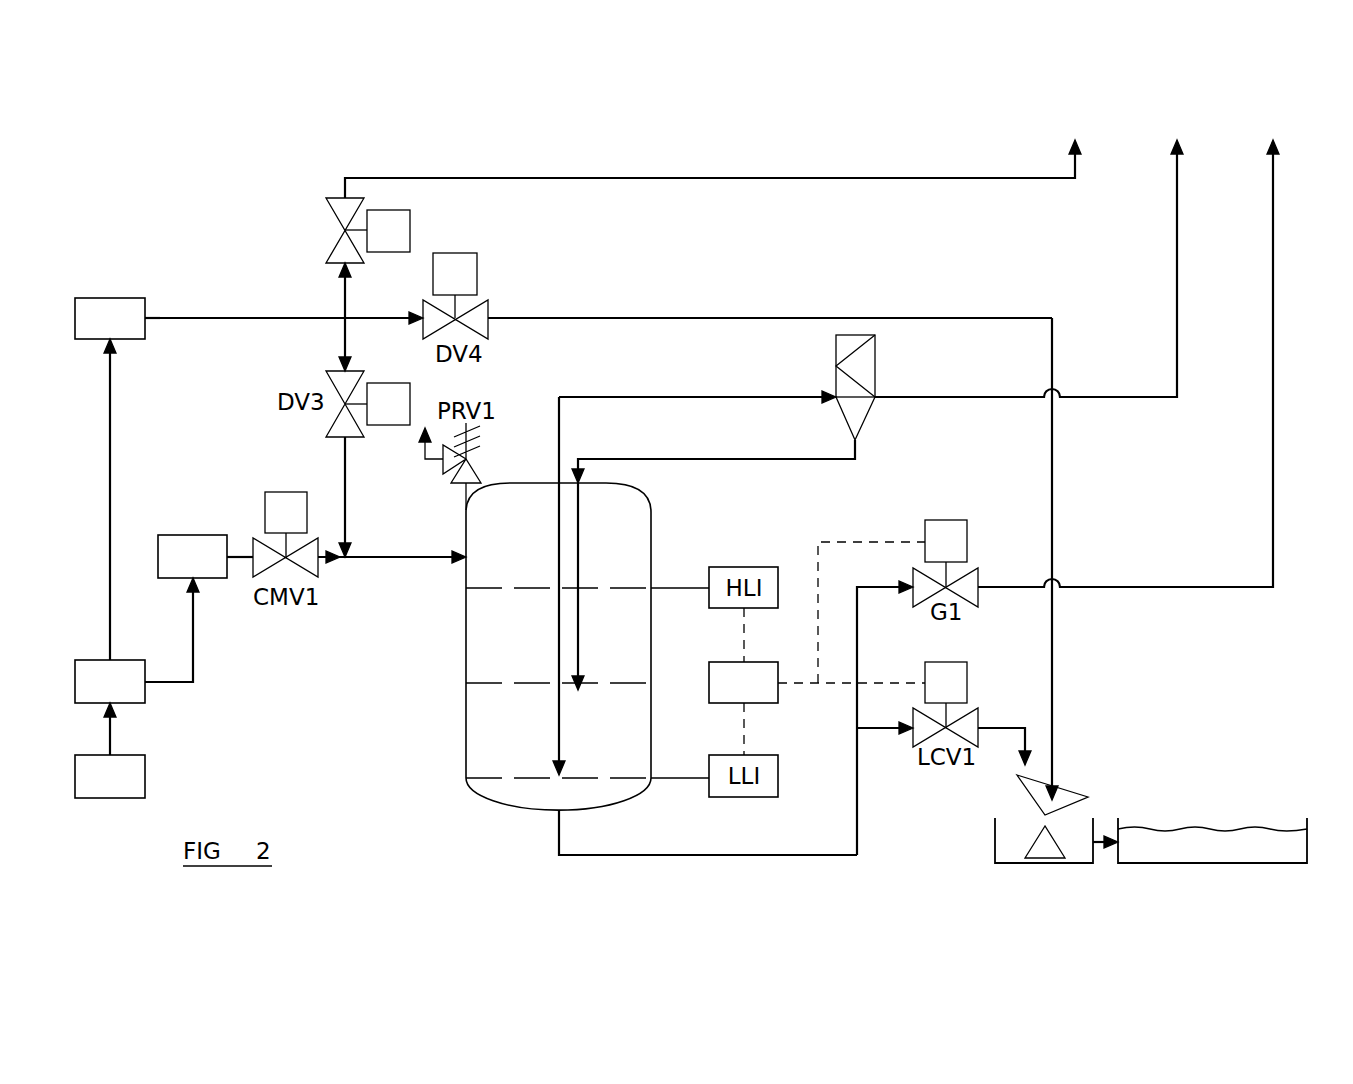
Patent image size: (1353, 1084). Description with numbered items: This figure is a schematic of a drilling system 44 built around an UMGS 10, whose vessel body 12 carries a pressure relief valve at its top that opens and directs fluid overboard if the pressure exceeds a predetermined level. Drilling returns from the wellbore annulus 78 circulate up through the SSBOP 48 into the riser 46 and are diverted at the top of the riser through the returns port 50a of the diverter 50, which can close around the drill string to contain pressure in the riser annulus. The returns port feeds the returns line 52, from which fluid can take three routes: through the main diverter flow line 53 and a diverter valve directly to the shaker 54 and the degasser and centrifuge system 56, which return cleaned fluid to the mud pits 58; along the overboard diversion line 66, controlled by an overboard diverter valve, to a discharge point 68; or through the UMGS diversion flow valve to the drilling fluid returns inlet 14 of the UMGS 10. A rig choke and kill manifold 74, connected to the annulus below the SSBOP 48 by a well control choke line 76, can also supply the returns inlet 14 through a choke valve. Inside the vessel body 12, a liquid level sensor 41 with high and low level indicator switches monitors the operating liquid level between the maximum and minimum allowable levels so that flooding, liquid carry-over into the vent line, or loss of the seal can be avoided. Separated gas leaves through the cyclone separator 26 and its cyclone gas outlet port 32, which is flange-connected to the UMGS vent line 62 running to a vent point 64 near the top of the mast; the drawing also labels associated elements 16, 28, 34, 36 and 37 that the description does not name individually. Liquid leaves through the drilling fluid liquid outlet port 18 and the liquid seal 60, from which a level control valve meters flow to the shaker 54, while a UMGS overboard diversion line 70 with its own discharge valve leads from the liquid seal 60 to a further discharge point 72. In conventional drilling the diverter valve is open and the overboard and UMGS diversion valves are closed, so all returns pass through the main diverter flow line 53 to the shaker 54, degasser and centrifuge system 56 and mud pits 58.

The UMGS 10 is at (533, 646).
The vessel body 12 is at (465, 637).
The drilling fluid returns inlet 14 is at (478, 548).
The vapor outlet line 16 is at (558, 483).
The drilling fluid liquid outlet port 18 is at (555, 812).
The cyclone separator 26 is at (836, 350).
The separator inlet line 28 is at (727, 397).
The cyclone gas outlet port 32 is at (876, 396).
The separator outlet 34 is at (857, 441).
The return line 36 is at (606, 458).
The return line discharge 37 is at (580, 690).
The liquid level sensor 41 is at (743, 682).
The drilling system 44 is at (290, 198).
The riser 46 is at (112, 455).
The SSBOP 48 is at (110, 681).
The diverter 50 is at (110, 318).
The returns port 50a is at (147, 316).
The returns line 52 is at (233, 318).
The main diverter flow line 53 is at (1056, 701).
The shaker 54 is at (1085, 802).
The degasser and centrifuge system 56 is at (995, 840).
The reservoir of drilling fluid (mud pits) 58 is at (1232, 855).
The liquid seal 60 is at (858, 827).
The UMGS vent line 62 is at (1090, 394).
The vent point 64 is at (1172, 177).
The overboard diversion line 66 is at (594, 176).
The discharge point 68 is at (1072, 168).
The UMGS overboard diversion line 70 is at (1278, 383).
The further discharge point 72 is at (1268, 177).
The rig choke and kill manifold 74 is at (192, 556).
The well control choke line 76 is at (195, 657).
The wellbore annulus 78 is at (110, 776).